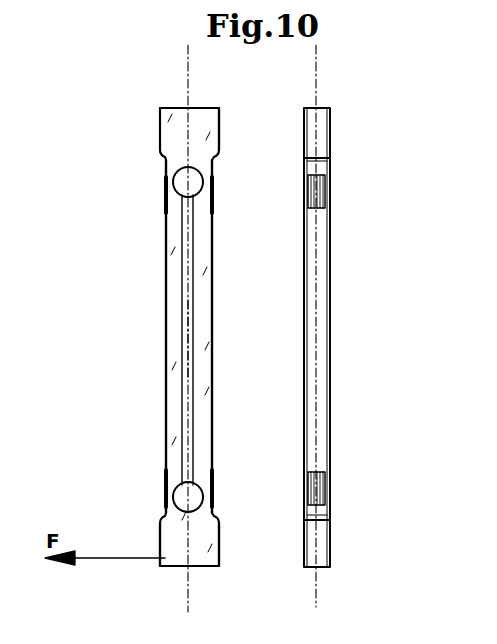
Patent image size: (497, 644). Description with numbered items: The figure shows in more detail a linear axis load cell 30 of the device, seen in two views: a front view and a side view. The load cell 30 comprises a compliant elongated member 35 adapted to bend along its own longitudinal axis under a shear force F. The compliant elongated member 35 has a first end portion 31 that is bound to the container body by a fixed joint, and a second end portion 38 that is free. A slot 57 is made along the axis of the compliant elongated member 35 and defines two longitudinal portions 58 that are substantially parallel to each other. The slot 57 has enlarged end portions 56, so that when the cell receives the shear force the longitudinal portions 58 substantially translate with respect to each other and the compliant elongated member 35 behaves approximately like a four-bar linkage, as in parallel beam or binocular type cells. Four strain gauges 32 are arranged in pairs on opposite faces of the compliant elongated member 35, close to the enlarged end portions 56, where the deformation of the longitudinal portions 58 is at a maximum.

The load cell 30 is at (226, 139).
The first end portion 31 is at (181, 112).
The strain gauges 32 is at (212, 211).
The compliant elongated member 35 is at (166, 276).
The second end portion 38 is at (183, 567).
The enlarged end portions 56 is at (183, 177).
The slot 57 is at (188, 342).
The longitudinal portions 58 is at (170, 312).